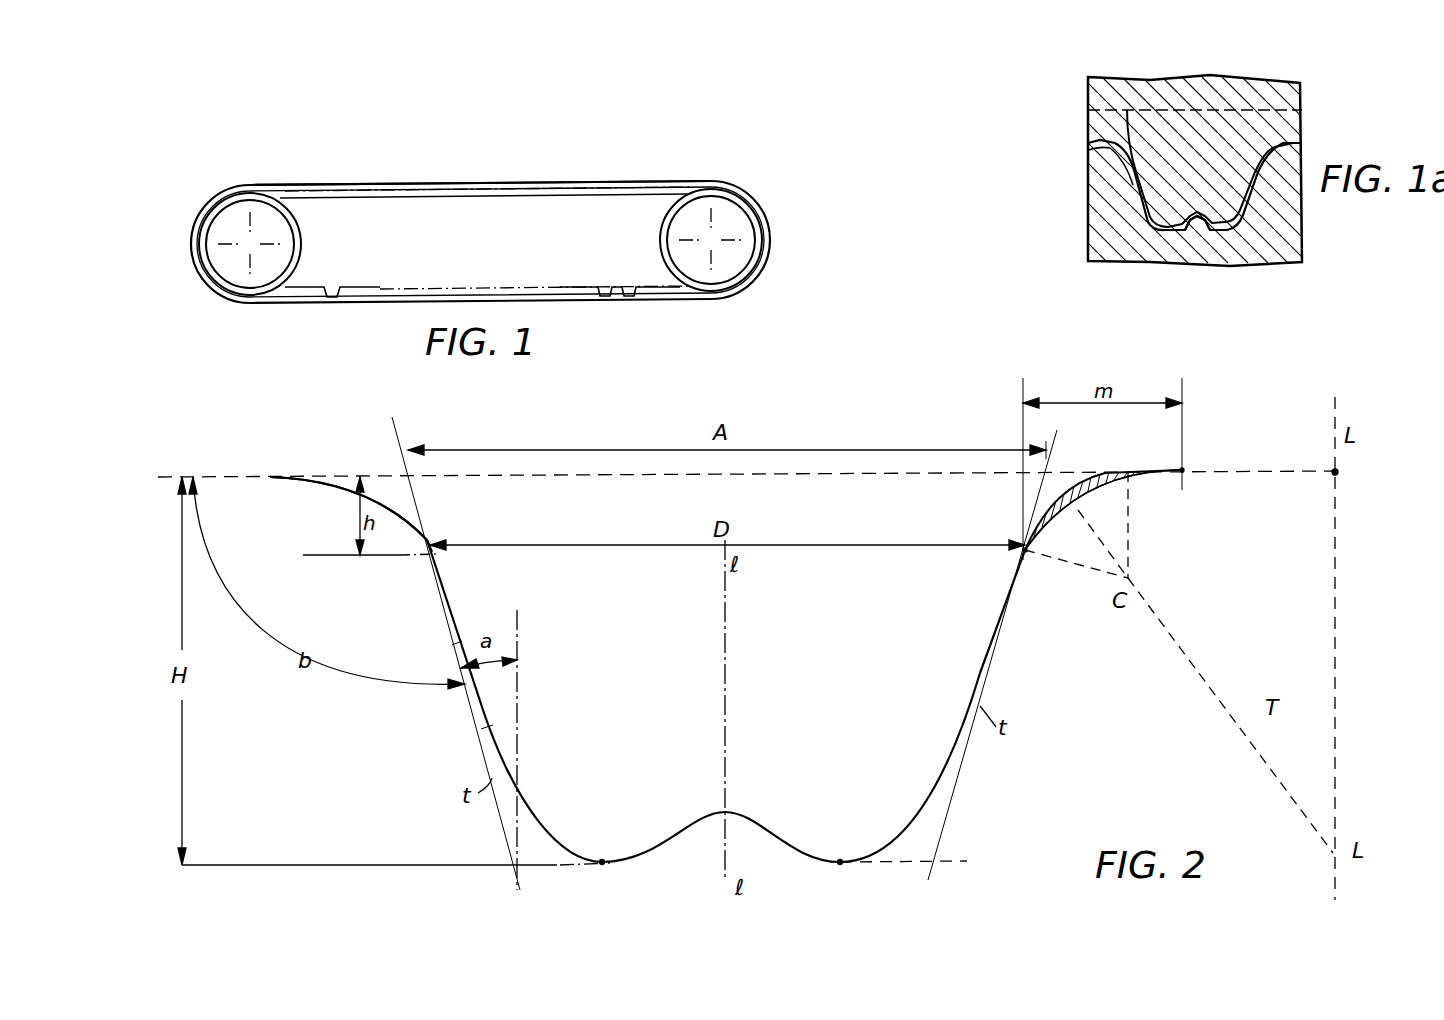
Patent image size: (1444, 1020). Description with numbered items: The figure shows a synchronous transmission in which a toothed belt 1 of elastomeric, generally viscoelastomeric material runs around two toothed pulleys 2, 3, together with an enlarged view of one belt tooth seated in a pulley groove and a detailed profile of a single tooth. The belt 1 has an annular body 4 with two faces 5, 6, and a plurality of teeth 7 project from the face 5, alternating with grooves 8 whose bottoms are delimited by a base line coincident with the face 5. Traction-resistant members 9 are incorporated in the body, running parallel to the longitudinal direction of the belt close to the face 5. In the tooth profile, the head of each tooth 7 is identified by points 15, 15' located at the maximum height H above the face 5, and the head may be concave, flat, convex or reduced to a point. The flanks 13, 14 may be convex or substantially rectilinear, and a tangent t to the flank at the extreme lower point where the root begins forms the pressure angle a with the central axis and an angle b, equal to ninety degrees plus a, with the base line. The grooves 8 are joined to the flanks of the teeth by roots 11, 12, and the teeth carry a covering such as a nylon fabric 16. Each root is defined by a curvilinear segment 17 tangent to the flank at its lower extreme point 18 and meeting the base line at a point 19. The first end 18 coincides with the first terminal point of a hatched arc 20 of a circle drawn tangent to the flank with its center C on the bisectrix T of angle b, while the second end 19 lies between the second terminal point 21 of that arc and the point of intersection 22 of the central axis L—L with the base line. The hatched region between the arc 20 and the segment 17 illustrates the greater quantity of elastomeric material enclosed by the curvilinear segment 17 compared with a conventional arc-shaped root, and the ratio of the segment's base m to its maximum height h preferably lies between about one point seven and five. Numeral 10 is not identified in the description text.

In FIG. 1, the toothed belt 1 is at (550, 185).
In FIG. 1, the toothed pulley 2 is at (240, 276).
In FIG. 1, the toothed pulley 3 is at (737, 273).
In FIG. 1a, the toothed pulley 3 is at (1150, 262).
In FIG. 1, the annular body 4 is at (345, 188).
In FIG. 1, the face 5 is at (378, 198).
In FIG. 2, the face 5 is at (321, 474).
In FIG. 1, the face 6 is at (624, 182).
In FIG. 1, the tooth 7 is at (628, 288).
In FIG. 1a, the tooth 7 is at (1127, 105).
In FIG. 2, the tooth 7 is at (497, 590).
In FIG. 1, the groove 8 is at (331, 286).
In FIG. 1a, the groove 8 is at (1198, 232).
In FIG. 1a, the traction-resistant member 9 is at (1230, 100).
In FIG. 2, the tooth root hump 10 is at (668, 842).
In FIG. 2, the root 11 is at (385, 564).
In FIG. 2, the root 12 is at (1080, 507).
In FIG. 2, the flank 13 is at (485, 712).
In FIG. 2, the flank 14 is at (982, 672).
In FIG. 2, the point 15 is at (594, 824).
In FIG. 2, the point 15' is at (841, 880).
In FIG. 1a, the nylon fabric 16 is at (1128, 191).
In FIG. 2, the nylon fabric 16 is at (906, 830).
In FIG. 2, the curvilinear segment 17 is at (342, 493).
In FIG. 2, the first end 18 is at (1025, 551).
In FIG. 2, the second end 19 is at (1184, 471).
In FIG. 2, the arc of a circle 20 is at (1082, 482).
In FIG. 2, the second terminal point 21 is at (1132, 472).
In FIG. 2, the point of intersection 22 is at (1332, 471).